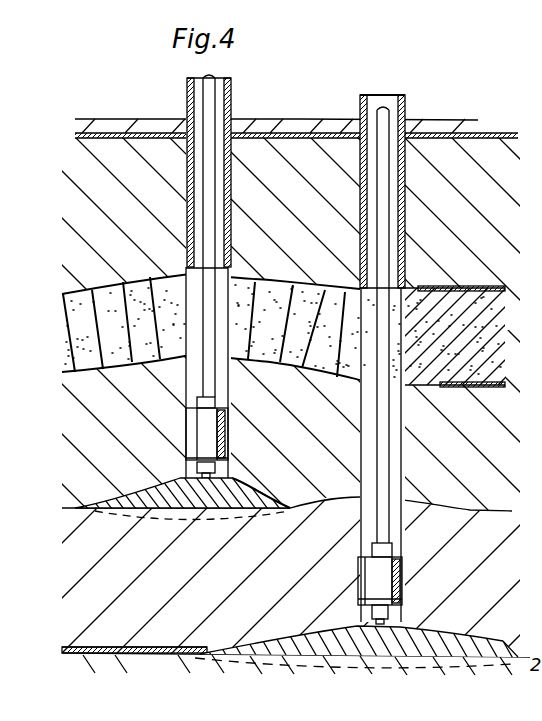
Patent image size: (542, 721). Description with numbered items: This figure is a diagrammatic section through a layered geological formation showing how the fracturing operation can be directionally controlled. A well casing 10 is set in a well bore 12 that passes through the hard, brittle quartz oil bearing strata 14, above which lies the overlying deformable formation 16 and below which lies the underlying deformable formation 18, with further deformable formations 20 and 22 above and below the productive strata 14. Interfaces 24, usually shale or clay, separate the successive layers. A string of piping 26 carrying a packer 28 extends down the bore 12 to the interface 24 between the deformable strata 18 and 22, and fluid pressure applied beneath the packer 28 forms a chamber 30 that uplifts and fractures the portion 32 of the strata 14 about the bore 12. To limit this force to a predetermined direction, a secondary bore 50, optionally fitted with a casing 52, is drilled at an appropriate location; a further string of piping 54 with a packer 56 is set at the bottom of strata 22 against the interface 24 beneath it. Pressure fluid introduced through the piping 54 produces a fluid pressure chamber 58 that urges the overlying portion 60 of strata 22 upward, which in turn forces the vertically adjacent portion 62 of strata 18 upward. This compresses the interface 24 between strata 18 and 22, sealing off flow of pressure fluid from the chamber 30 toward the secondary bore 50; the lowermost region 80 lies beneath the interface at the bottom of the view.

The well casing 10 is at (231, 98).
The well bore 12 is at (228, 405).
The quartz oil bearing strata 14 is at (470, 302).
The overlying deformable formation 16 is at (292, 142).
The underlying deformable formation 18 is at (93, 445).
The deformable formation 20 is at (531, 483).
The deformable formation 22 is at (160, 593).
The interfaces 24 is at (284, 512).
The string of piping 26 is at (211, 219).
The packer 28 is at (228, 459).
The chamber 30 is at (167, 496).
The uplifted and fractured portion 32 is at (245, 284).
The secondary bore 50 is at (402, 453).
The casing 52 is at (401, 205).
The string of piping 54 is at (385, 125).
The packer 56 is at (402, 596).
The fluid pressure chamber 58 is at (348, 643).
The overlying portion of strata 22 60 is at (440, 515).
The overlying portion of strata 18 62 is at (437, 417).
The bottom formation 80 is at (297, 688).